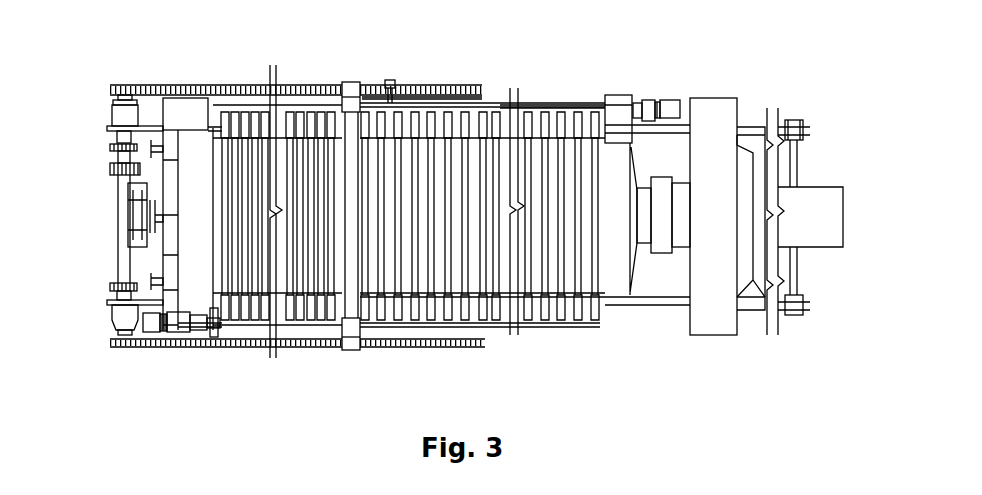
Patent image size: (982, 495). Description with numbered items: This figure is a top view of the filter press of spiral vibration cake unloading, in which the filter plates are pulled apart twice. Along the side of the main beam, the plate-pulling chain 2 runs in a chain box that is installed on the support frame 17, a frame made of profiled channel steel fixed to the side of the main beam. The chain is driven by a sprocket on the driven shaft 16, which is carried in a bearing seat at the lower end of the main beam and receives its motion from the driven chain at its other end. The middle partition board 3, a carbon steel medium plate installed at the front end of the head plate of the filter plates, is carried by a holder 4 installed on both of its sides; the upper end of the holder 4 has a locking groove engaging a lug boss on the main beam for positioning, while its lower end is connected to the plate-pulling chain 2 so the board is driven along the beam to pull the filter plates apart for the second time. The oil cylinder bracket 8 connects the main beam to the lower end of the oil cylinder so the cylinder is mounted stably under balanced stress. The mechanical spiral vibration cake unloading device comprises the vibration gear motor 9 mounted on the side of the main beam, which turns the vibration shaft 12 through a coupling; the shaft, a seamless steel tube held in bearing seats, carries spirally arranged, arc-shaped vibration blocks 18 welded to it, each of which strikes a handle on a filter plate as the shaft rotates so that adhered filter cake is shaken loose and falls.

The plate-pulling chain 2 is at (208, 85).
The middle partition board 3 is at (347, 190).
The holder 4 is at (342, 85).
The oil cylinder bracket 8 is at (788, 122).
The vibration gear motor 9 is at (117, 283).
The vibration shaft 12 is at (543, 105).
The driven shaft 16 is at (122, 102).
The support frame 17 is at (390, 83).
The vibration block 18 is at (402, 97).